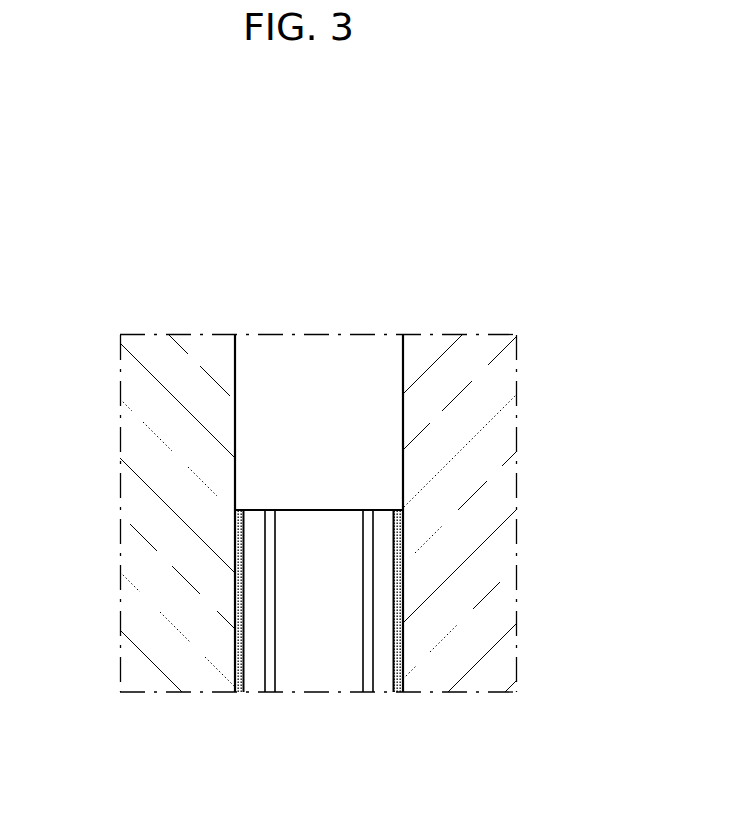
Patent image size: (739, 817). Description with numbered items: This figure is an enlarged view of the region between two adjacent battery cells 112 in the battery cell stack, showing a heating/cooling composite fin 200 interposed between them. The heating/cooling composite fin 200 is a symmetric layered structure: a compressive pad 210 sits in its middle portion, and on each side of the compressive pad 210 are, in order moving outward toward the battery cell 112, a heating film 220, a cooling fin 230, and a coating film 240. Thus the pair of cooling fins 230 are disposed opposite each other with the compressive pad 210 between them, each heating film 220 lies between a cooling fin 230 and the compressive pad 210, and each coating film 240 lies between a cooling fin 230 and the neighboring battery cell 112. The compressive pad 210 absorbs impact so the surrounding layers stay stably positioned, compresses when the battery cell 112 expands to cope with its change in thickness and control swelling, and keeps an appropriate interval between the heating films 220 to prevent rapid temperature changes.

The battery cell 112 is at (142, 464).
The heating/cooling composite fin 200 is at (318, 509).
The compressive pad 210 is at (347, 683).
The heating film 220 is at (270, 682).
The cooling fin 230 is at (255, 683).
The coating film 240 is at (237, 622).